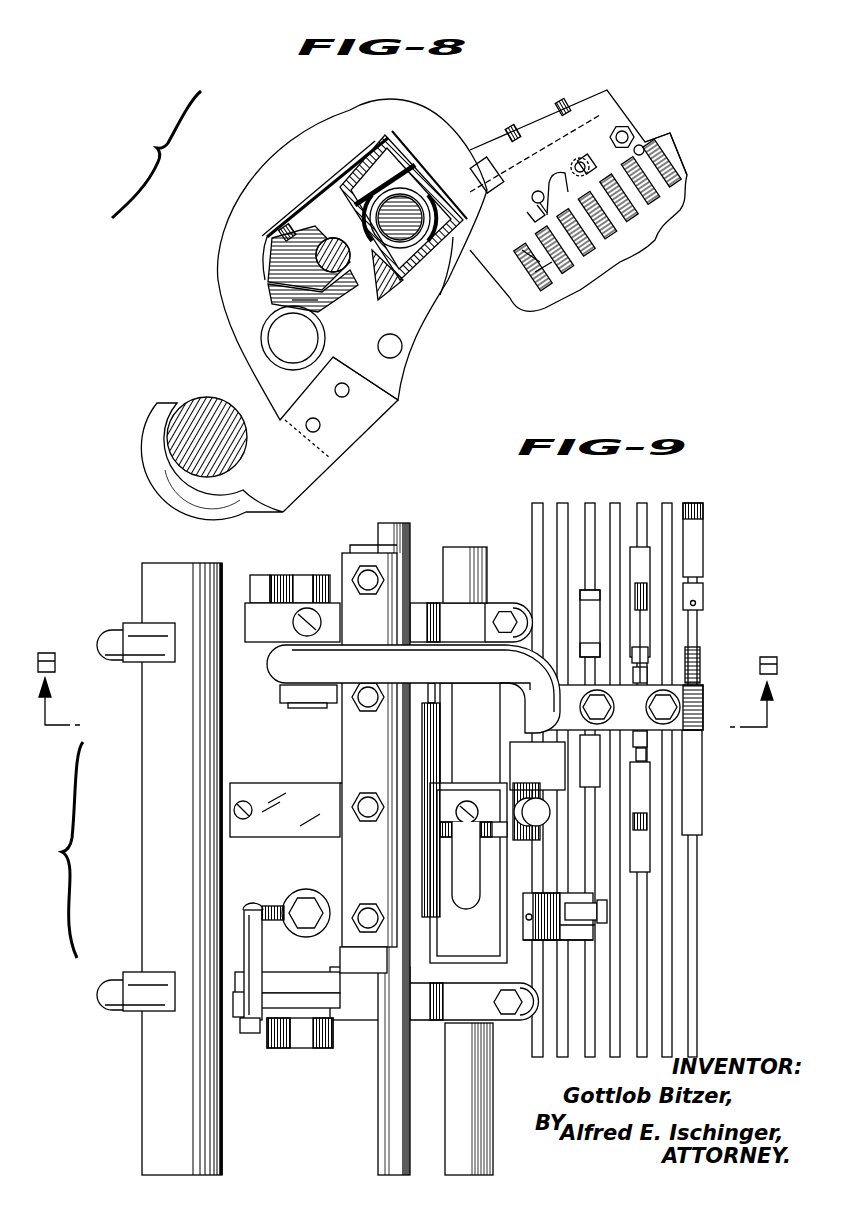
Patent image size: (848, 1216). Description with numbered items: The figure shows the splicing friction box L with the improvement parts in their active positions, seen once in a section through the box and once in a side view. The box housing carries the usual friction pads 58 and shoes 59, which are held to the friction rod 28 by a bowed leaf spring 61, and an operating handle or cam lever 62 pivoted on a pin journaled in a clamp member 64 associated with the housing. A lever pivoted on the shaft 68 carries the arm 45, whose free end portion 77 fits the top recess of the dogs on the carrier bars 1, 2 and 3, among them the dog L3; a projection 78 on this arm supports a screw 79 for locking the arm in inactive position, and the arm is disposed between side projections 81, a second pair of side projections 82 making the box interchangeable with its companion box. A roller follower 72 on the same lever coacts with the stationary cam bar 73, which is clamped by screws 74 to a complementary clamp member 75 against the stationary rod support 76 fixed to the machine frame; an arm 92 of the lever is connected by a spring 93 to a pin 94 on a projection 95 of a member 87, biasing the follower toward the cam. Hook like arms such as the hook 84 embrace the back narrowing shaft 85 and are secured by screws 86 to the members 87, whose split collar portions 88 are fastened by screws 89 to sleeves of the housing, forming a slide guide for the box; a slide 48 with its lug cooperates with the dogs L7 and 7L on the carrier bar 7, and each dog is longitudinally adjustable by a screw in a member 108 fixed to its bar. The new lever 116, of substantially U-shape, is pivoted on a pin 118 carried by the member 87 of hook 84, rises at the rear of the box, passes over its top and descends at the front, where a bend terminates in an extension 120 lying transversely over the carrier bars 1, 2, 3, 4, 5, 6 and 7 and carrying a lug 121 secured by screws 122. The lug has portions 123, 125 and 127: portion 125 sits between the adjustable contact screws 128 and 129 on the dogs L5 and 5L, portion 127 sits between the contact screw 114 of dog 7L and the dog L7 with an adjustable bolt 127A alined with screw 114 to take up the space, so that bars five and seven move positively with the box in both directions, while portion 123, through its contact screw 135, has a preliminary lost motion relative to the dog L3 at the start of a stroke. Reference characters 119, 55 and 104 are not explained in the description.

In FIG. 8, the splicing friction box L is at (156, 154).
In FIG. 9, the splicing friction box L is at (58, 850).
In FIG. 8, the lever 116 is at (257, 184).
In FIG. 9, the lever 116 is at (272, 666).
In FIG. 8, the hook like arm 84 is at (147, 468).
In FIG. 9, the hook like arm 84 is at (112, 638).
In FIG. 8, the back narrowing shaft 85 is at (198, 403).
In FIG. 9, the back narrowing shaft 85 is at (142, 817).
In FIG. 8, the pin 118 is at (278, 347).
In FIG. 9, the pin 118 is at (303, 706).
In FIG. 8, the member 87 is at (372, 385).
In FIG. 9, the member 87 is at (337, 605).
In FIG. 8, the screw 86 is at (344, 397).
In FIG. 9, the screw 86 is at (302, 580).
In FIG. 8, the clamp member 64 is at (420, 306).
In FIG. 9, the clamp member 64 is at (422, 857).
In FIG. 8, the shaft 68 is at (403, 353).
In FIG. 8, the bowed leaf spring 61 is at (396, 200).
In FIG. 9, the bowed leaf spring 61 is at (368, 759).
In FIG. 8, the shoe 59 is at (333, 181).
In FIG. 8, the friction pad 58 is at (376, 195).
In FIG. 8, the split collar portion 88 is at (372, 186).
In FIG. 9, the split collar portion 88 is at (530, 612).
In FIG. 8, the screw 89 is at (398, 138).
In FIG. 9, the screw 89 is at (506, 624).
In FIG. 8, the plate 119 is at (432, 142).
In FIG. 9, the plate 119 is at (518, 681).
In FIG. 8, the side projection 82 is at (487, 160).
In FIG. 9, the side projection 82 is at (560, 672).
In FIG. 8, the screw 74 is at (273, 238).
In FIG. 9, the screw 74 is at (363, 795).
In FIG. 8, the stationary cam bar 73 is at (273, 268).
In FIG. 9, the stationary cam bar 73 is at (330, 782).
In FIG. 8, the stationary rod support 76 is at (300, 288).
In FIG. 9, the stationary rod support 76 is at (390, 533).
In FIG. 8, the complementary clamp member 75 is at (285, 312).
In FIG. 8, the extension 120 is at (613, 113).
In FIG. 9, the extension 120 is at (703, 705).
In FIG. 8, the screw 122 is at (515, 128).
In FIG. 9, the screw 122 is at (652, 700).
In FIG. 8, the lug 121 is at (633, 128).
In FIG. 8, the portion of lug 127 is at (644, 150).
In FIG. 9, the adjustable screw or bolt 127A is at (698, 650).
In FIG. 8, the dog 7L is at (672, 155).
In FIG. 9, the dog 7L is at (696, 530).
In FIG. 8, the dog 5L is at (587, 164).
In FIG. 9, the dog 5L is at (646, 560).
In FIG. 8, the carrier bar 1 is at (522, 245).
In FIG. 9, the carrier bar 1 is at (534, 768).
In FIG. 8, the carrier bar 2 is at (545, 265).
In FIG. 9, the carrier bar 2 is at (560, 768).
In FIG. 8, the carrier bar 3 is at (580, 250).
In FIG. 9, the carrier bar 3 is at (587, 768).
In FIG. 8, the carrier bar 4 is at (603, 230).
In FIG. 9, the carrier bar 4 is at (611, 768).
In FIG. 8, the carrier bar 5 is at (643, 203).
In FIG. 9, the carrier bar 5 is at (639, 768).
In FIG. 8, the carrier bar 6 is at (657, 190).
In FIG. 9, the carrier bar 6 is at (664, 768).
In FIG. 8, the carrier bar 7 is at (670, 175).
In FIG. 9, the carrier bar 7 is at (696, 873).
In FIG. 8, the portion of lug 125 is at (572, 162).
In FIG. 8, the contact screw 135 is at (532, 198).
In FIG. 8, the portion of lug 123 is at (530, 258).
In FIG. 8, the dog L3 is at (538, 270).
In FIG. 9, the dog L3 is at (597, 773).
In FIG. 9, the dog L5 is at (646, 856).
In FIG. 9, the dog L7 is at (699, 818).
In FIG. 9, the contact screw 114 is at (697, 592).
In FIG. 9, the adjustable contact screw 129 is at (649, 679).
In FIG. 9, the adjustable contact screw 128 is at (648, 742).
In FIG. 9, the member 108 is at (583, 617).
In FIG. 9, the arm 45 is at (578, 940).
In FIG. 9, the screw 79 is at (607, 910).
In FIG. 9, the free end portion 77 is at (603, 932).
In FIG. 9, the projection 78 is at (552, 936).
In FIG. 9, the knob 55 is at (546, 809).
In FIG. 9, the operating handle or cam lever 62 is at (470, 905).
In FIG. 9, the side projection 81 is at (560, 967).
In FIG. 9, the slide 48 is at (236, 795).
In FIG. 9, the roller follower 72 is at (307, 936).
In FIG. 9, the arm of lever 92 is at (300, 894).
In FIG. 9, the spring 93 is at (252, 905).
In FIG. 9, the pin 94 is at (250, 958).
In FIG. 9, the projection 95 is at (305, 1020).
In FIG. 9, the bracket 104 is at (426, 606).
In FIG. 9, the friction rod 28 is at (473, 553).